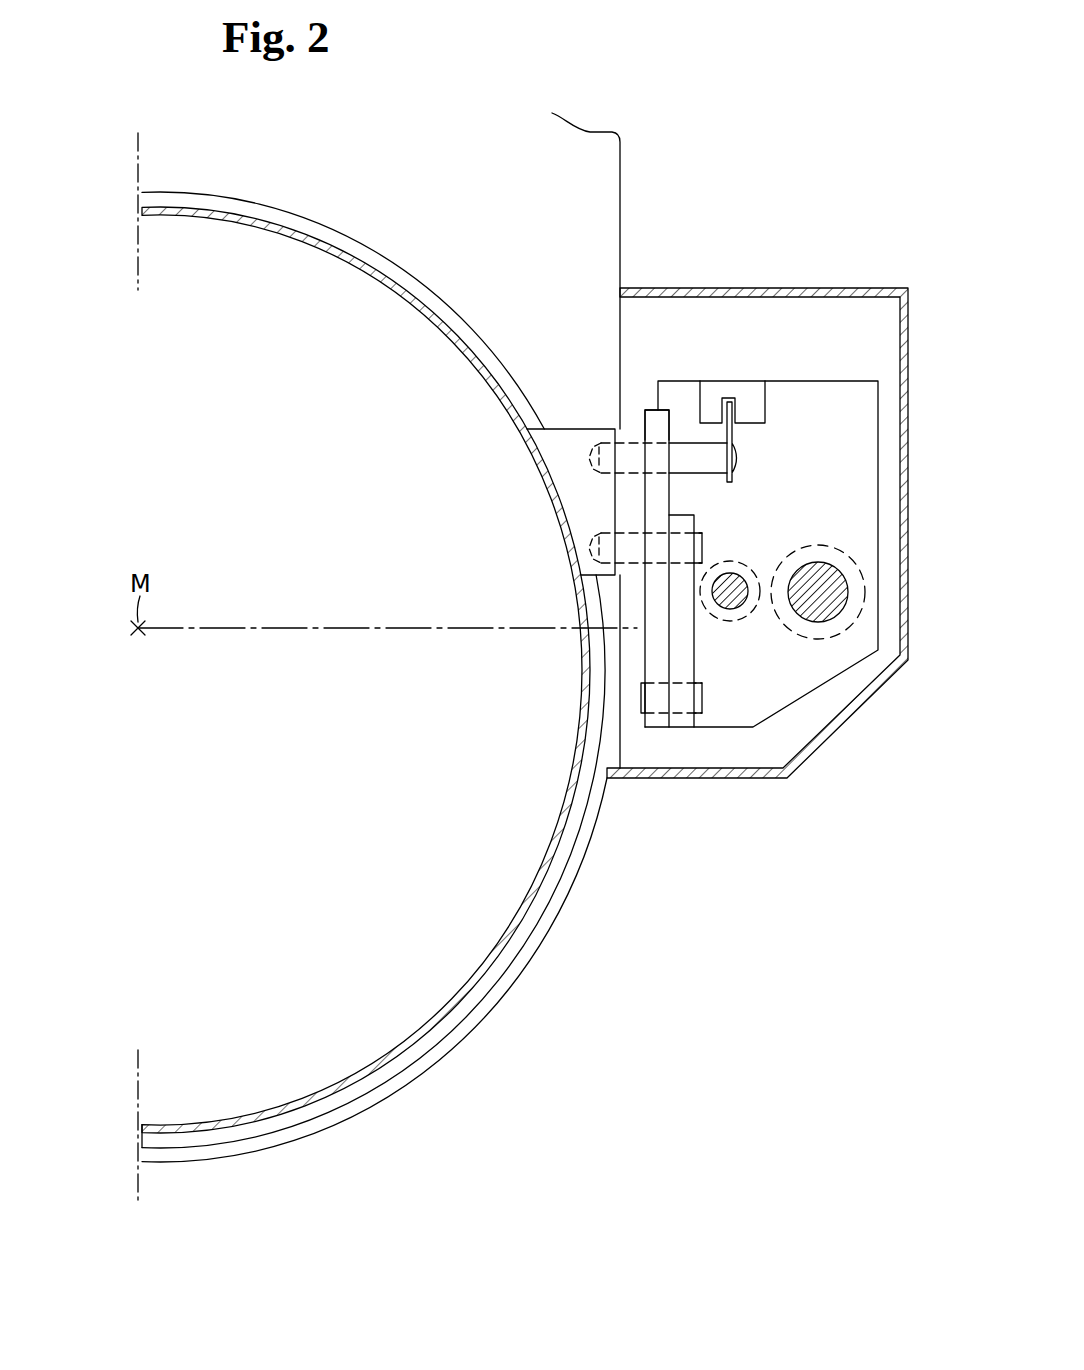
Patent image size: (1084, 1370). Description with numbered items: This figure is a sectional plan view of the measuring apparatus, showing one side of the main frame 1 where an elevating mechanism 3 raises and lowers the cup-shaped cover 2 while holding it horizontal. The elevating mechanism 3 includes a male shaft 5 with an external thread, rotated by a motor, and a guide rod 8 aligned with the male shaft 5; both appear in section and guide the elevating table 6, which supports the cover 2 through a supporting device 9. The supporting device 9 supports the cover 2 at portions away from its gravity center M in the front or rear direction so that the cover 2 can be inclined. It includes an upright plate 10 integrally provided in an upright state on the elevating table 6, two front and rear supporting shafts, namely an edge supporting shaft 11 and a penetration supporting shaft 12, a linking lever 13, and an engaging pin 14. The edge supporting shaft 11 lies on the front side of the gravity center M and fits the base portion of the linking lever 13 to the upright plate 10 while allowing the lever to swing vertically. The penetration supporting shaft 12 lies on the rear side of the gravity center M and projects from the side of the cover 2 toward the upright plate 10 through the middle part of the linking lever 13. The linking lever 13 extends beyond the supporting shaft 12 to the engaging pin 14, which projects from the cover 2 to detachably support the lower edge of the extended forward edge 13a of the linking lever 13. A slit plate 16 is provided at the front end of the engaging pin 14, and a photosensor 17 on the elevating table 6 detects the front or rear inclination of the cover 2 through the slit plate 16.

The main frame 1 is at (458, 1038).
The cover 2 is at (378, 1058).
The elevating mechanism 3 is at (864, 269).
The male shaft 5 is at (743, 571).
The elevating table 6 is at (878, 427).
The guide rod 8 is at (835, 586).
The supporting device 9 is at (688, 658).
The upright plate 10 is at (710, 648).
The edge supporting shaft 11 is at (640, 703).
The penetration supporting shaft 12 is at (632, 552).
The linking lever 13 is at (657, 643).
The extended forward edge 13a is at (650, 418).
The engaging pin 14 is at (695, 462).
The slit plate 16 is at (735, 432).
The photosensor 17 is at (752, 390).